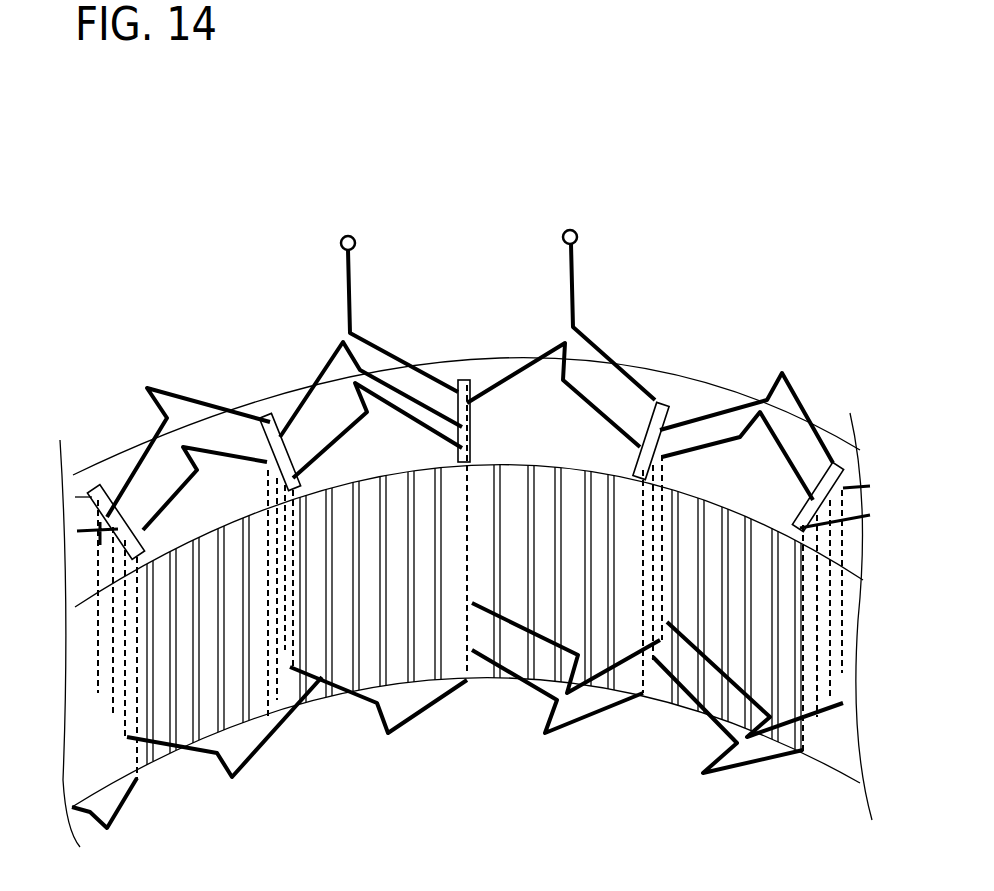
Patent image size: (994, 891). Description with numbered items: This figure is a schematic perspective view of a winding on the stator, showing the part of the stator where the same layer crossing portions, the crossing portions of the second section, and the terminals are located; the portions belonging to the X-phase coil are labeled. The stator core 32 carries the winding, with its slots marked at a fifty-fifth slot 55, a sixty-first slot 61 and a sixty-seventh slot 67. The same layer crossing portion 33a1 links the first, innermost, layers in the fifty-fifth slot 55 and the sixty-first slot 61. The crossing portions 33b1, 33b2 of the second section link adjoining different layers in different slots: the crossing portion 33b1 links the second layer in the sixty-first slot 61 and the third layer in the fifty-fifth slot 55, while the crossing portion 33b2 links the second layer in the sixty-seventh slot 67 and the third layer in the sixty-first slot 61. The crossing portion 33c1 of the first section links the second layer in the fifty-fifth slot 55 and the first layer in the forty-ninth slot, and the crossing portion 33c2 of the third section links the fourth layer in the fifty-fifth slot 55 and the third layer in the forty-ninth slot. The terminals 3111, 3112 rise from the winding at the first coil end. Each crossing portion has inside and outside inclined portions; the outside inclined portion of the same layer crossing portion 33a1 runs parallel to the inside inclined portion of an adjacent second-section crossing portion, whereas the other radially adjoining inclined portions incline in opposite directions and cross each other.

The stator coil 32 is at (715, 403).
The same layer crossing portion 33a1 is at (330, 445).
The crossing portion in the second section 33b1 is at (360, 400).
The crossing portion in the second section 33b2 is at (558, 372).
The crossing portion 33c1 is at (152, 497).
The crossing portion 33c2 is at (163, 490).
The stator core 55 is at (247, 383).
The slot insulator 61 is at (466, 349).
The insulating layer 67 is at (682, 364).
The terminal 3111 is at (350, 267).
The terminal 3112 is at (573, 265).